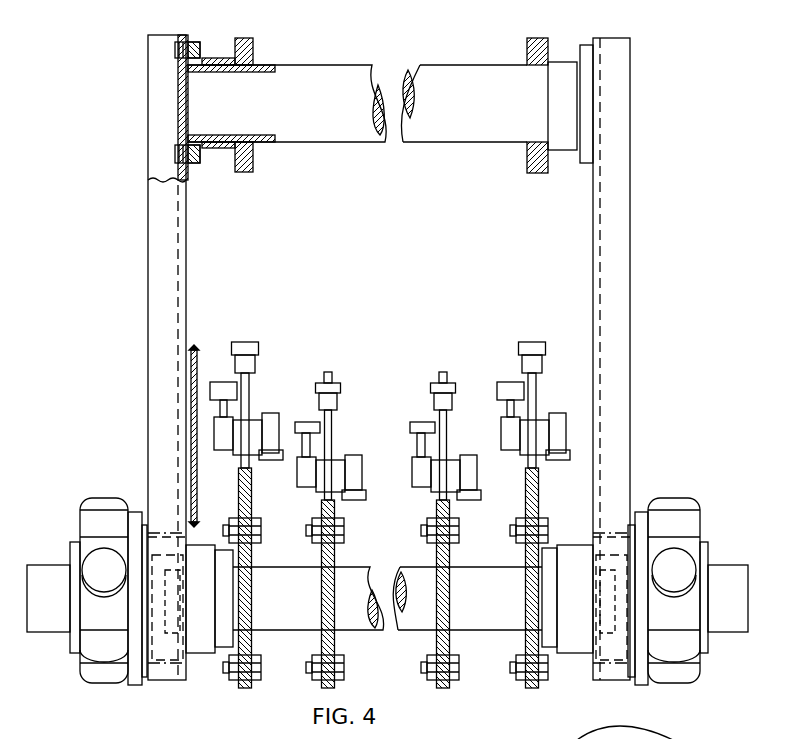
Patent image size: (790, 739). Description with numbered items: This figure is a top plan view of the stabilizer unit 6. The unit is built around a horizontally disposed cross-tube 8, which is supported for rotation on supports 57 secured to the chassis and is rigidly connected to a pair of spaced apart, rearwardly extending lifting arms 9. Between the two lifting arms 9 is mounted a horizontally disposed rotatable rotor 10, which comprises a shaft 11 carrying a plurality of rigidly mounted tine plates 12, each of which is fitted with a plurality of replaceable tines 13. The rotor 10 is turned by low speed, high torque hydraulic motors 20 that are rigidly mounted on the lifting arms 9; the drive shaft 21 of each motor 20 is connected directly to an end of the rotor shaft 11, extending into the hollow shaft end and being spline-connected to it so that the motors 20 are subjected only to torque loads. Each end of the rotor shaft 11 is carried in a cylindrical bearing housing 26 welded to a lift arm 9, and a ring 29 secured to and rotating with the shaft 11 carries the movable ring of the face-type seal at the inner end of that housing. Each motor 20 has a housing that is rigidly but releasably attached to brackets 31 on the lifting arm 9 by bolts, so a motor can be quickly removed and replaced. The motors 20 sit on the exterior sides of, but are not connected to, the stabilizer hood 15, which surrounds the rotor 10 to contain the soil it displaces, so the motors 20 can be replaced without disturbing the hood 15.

The stabilizer unit 6 is at (643, 309).
The cross-tube 8 is at (420, 67).
The lifting arms 9 is at (152, 322).
The rotor 10 is at (350, 423).
The shaft 11 is at (400, 567).
The tine plates 12 is at (334, 440).
The replaceable tines 13 is at (237, 348).
The stabilizer hood 15 is at (198, 478).
The hydraulic motors 20 is at (80, 525).
The drive shaft 21 is at (172, 632).
The bearing housing 26 is at (200, 545).
The ring 29 is at (227, 585).
The brackets 31 is at (172, 535).
The supports 57 is at (253, 45).